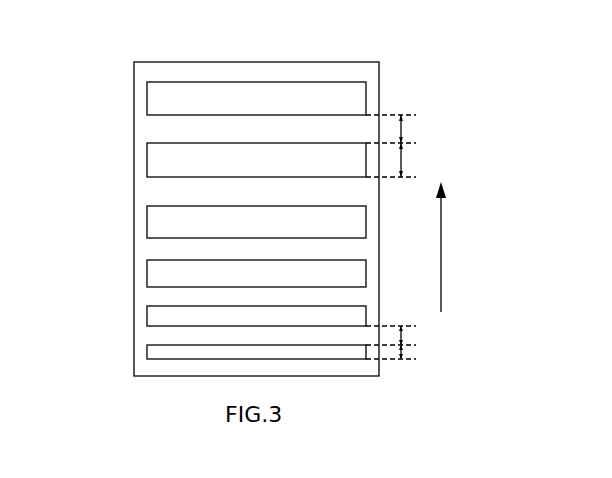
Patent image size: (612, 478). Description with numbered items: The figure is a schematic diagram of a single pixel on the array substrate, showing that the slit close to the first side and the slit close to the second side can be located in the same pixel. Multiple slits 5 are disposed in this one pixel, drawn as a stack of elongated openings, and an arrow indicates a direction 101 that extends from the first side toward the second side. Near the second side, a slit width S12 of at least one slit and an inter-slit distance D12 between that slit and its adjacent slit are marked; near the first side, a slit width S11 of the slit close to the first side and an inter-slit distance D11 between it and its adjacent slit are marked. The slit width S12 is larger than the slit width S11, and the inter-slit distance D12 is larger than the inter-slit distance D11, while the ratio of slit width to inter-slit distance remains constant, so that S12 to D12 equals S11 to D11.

The slits 5 is at (152, 355).
The direction 101 is at (464, 247).
The inter-slit distance D12 is at (398, 129).
The slit width S12 is at (398, 160).
The inter-slit distance D11 is at (398, 335).
The slit width S11 is at (398, 353).